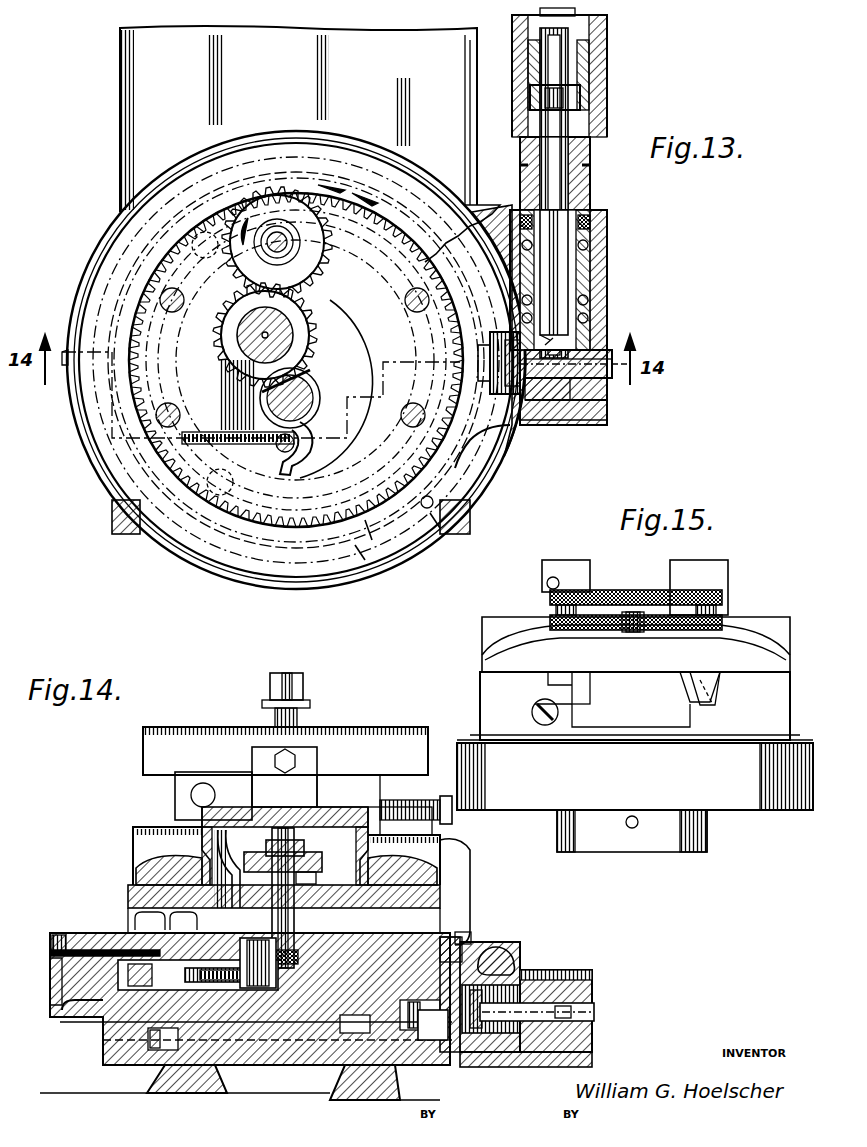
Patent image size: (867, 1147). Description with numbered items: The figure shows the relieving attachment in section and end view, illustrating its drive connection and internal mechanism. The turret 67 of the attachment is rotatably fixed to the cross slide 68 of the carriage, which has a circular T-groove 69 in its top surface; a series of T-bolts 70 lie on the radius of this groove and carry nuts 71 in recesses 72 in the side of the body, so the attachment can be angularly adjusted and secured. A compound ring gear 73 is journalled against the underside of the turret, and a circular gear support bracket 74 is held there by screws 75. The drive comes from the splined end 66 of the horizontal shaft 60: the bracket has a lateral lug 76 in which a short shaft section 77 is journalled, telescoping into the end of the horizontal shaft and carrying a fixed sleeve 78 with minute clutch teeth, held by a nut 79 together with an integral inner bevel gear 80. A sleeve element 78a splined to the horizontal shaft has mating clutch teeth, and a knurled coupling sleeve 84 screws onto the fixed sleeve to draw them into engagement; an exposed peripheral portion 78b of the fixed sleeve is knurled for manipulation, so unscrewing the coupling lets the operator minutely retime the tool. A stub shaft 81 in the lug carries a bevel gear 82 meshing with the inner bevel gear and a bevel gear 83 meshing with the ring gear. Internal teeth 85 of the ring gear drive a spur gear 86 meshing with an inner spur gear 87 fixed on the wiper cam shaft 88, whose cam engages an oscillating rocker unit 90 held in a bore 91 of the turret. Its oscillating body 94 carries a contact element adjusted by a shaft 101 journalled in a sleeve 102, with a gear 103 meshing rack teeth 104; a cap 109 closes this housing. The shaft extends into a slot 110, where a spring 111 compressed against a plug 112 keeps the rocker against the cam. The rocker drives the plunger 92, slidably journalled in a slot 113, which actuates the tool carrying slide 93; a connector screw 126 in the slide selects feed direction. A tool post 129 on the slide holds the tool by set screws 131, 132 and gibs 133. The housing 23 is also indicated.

In FIG. 13, the housing 23 is at (85, 236).
In FIG. 15, the housing 23 is at (470, 670).
In FIG. 14, the housing 23 is at (122, 860).
In FIG. 13, the horizontal shaft 60 is at (602, 26).
In FIG. 13, the splined end 66 is at (572, 78).
In FIG. 15, the turret 67 is at (480, 690).
In FIG. 14, the turret 67 is at (484, 936).
In FIG. 13, the cross slide 68 is at (462, 118).
In FIG. 14, the cross slide 68 is at (335, 1070).
In FIG. 14, the circular T-groove 69 is at (428, 1044).
In FIG. 13, the T-bolts 70 is at (170, 405).
In FIG. 14, the T-bolts 70 is at (130, 1060).
In FIG. 14, the nuts 71 is at (132, 916).
In FIG. 14, the recesses 72 is at (134, 908).
In FIG. 13, the compound ring gear 73 is at (365, 570).
In FIG. 14, the compound ring gear 73 is at (506, 952).
In FIG. 13, the gear support bracket 74 is at (428, 548).
In FIG. 15, the gear support bracket 74 is at (537, 800).
In FIG. 14, the gear support bracket 74 is at (446, 1068).
In FIG. 14, the screws 75 is at (412, 1040).
In FIG. 13, the lug 76 is at (605, 235).
In FIG. 13, the short shaft section 77 is at (565, 270).
In FIG. 13, the sleeve 78 is at (592, 180).
In FIG. 13, the sleeve element 78a is at (596, 58).
In FIG. 13, the exposed peripheral portion 78b is at (592, 192).
In FIG. 13, the nut 79 is at (592, 140).
In FIG. 13, the inner bevel gear 80 is at (585, 330).
In FIG. 14, the inner bevel gear 80 is at (575, 972).
In FIG. 13, the stub shaft 81 is at (603, 412).
In FIG. 14, the stub shaft 81 is at (596, 1006).
In FIG. 13, the bevel gear 82 is at (530, 410).
In FIG. 14, the bevel gear 82 is at (505, 988).
In FIG. 13, the bevel gear 83 is at (510, 437).
In FIG. 14, the bevel gear 83 is at (494, 1064).
In FIG. 13, the coupling sleeve 84 is at (590, 112).
In FIG. 13, the internal teeth 85 is at (355, 200).
In FIG. 14, the internal teeth 85 is at (450, 940).
In FIG. 13, the spur gear 86 is at (320, 262).
In FIG. 13, the inner spur gear 87 is at (312, 312).
In FIG. 13, the wiper cam shaft 88 is at (292, 343).
In FIG. 14, the oscillating rocker unit 90 is at (236, 868).
In FIG. 13, the bore 91 is at (312, 372).
In FIG. 15, the plunger 92 is at (695, 718).
In FIG. 14, the plunger 92 is at (305, 850).
In FIG. 15, the tool carrying slide 93 is at (725, 654).
In FIG. 14, the tool carrying slide 93 is at (438, 866).
In FIG. 14, the oscillating body 94 is at (178, 870).
In FIG. 14, the shaft 101 is at (296, 906).
In FIG. 14, the sleeve 102 is at (306, 880).
In FIG. 14, the gear 103 is at (290, 1030).
In FIG. 14, the rack teeth 104 is at (118, 935).
In FIG. 15, the cap 109 is at (628, 592).
In FIG. 14, the cap 109 is at (335, 812).
In FIG. 13, the slot 110 is at (312, 416).
In FIG. 14, the slot 110 is at (262, 1040).
In FIG. 13, the spring 111 is at (280, 446).
In FIG. 14, the spring 111 is at (238, 1000).
In FIG. 13, the plug 112 is at (200, 428).
In FIG. 14, the plug 112 is at (200, 1010).
In FIG. 15, the slot 113 is at (532, 716).
In FIG. 14, the slot 113 is at (388, 870).
In FIG. 15, the connector screw 126 is at (634, 633).
In FIG. 14, the tool post 129 is at (372, 740).
In FIG. 14, the set screw 131 is at (283, 770).
In FIG. 14, the set screw 132 is at (300, 690).
In FIG. 14, the gibs 133 is at (312, 772).